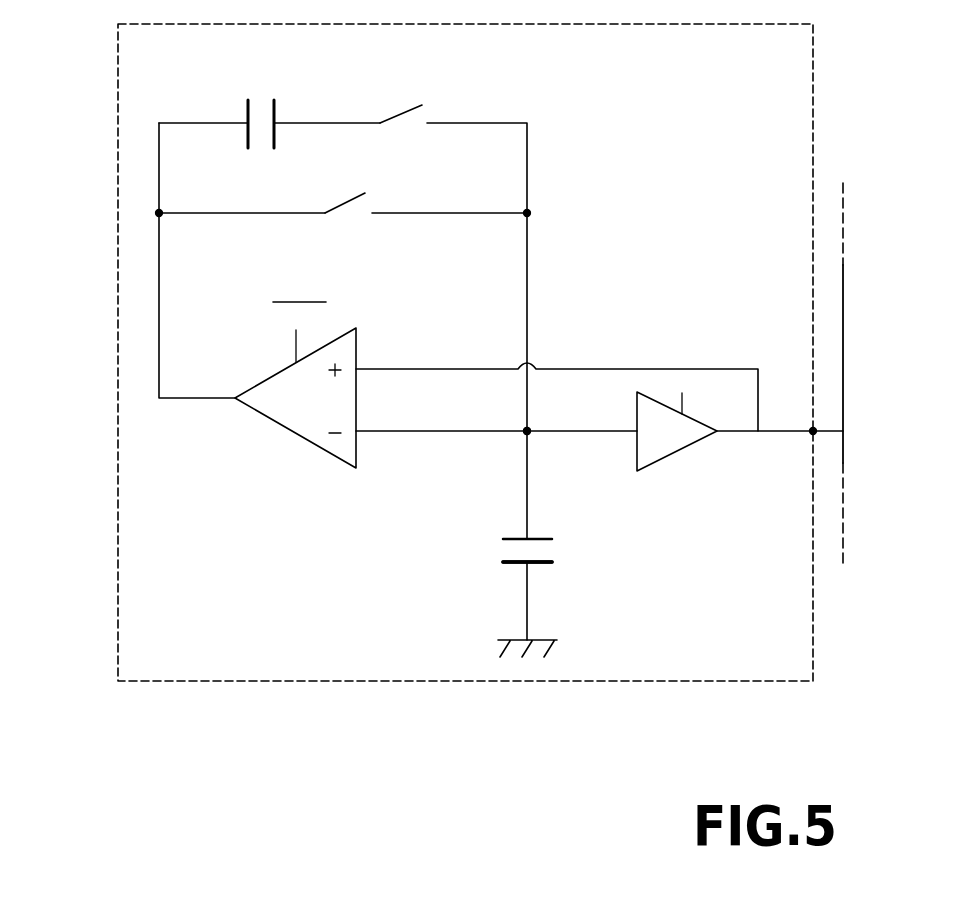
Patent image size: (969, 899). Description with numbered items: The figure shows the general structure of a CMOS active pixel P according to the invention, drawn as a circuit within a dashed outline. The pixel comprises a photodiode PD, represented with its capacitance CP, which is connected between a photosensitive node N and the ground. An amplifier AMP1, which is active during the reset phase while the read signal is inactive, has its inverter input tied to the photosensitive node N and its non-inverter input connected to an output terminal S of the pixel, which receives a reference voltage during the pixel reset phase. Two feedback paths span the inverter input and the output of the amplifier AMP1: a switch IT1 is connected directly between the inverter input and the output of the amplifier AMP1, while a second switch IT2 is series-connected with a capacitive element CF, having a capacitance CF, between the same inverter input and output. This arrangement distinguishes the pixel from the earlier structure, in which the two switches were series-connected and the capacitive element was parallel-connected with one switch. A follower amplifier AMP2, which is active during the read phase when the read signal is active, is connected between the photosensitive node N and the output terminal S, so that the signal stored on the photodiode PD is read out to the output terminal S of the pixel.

The CMOS active pixel P is at (118, 481).
The capacitive element CF is at (264, 99).
The switch IT1 is at (350, 202).
The switch IT2 is at (403, 110).
The amplifier AMP1 is at (292, 415).
The follower amplifier AMP2 is at (658, 448).
The photosensitive node N is at (526, 433).
The capacitance of the photodiode CP is at (557, 554).
The photodiode PD is at (518, 564).
The output terminal S is at (813, 434).